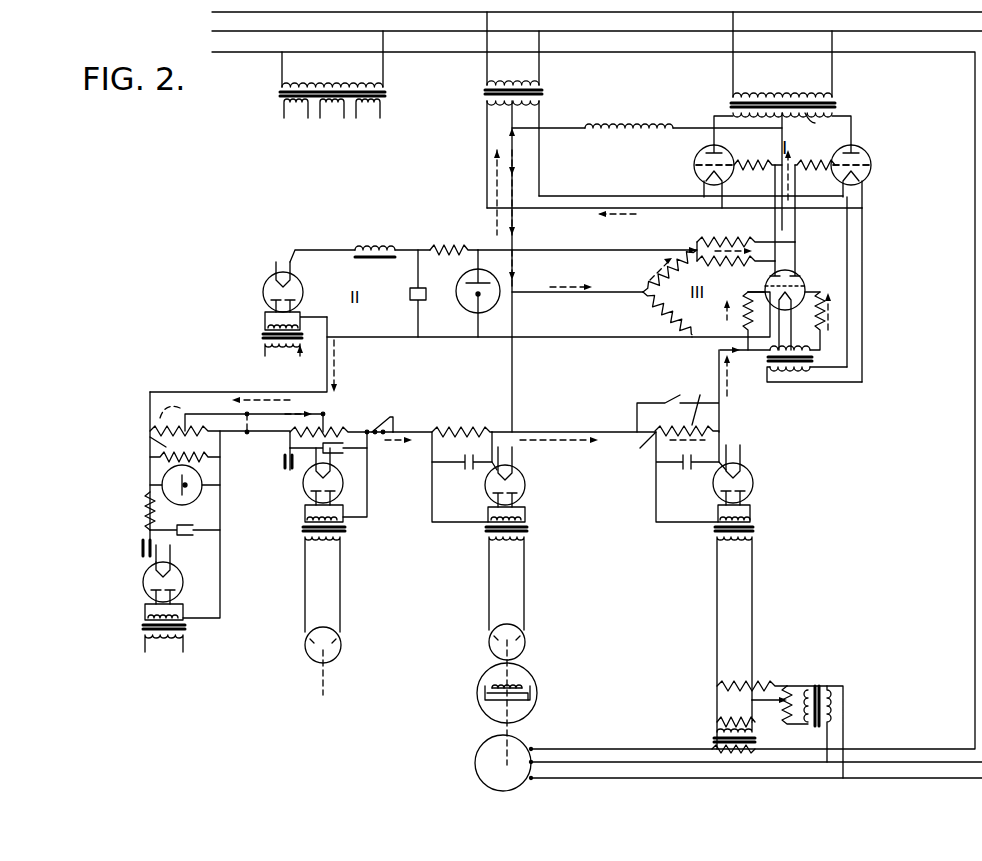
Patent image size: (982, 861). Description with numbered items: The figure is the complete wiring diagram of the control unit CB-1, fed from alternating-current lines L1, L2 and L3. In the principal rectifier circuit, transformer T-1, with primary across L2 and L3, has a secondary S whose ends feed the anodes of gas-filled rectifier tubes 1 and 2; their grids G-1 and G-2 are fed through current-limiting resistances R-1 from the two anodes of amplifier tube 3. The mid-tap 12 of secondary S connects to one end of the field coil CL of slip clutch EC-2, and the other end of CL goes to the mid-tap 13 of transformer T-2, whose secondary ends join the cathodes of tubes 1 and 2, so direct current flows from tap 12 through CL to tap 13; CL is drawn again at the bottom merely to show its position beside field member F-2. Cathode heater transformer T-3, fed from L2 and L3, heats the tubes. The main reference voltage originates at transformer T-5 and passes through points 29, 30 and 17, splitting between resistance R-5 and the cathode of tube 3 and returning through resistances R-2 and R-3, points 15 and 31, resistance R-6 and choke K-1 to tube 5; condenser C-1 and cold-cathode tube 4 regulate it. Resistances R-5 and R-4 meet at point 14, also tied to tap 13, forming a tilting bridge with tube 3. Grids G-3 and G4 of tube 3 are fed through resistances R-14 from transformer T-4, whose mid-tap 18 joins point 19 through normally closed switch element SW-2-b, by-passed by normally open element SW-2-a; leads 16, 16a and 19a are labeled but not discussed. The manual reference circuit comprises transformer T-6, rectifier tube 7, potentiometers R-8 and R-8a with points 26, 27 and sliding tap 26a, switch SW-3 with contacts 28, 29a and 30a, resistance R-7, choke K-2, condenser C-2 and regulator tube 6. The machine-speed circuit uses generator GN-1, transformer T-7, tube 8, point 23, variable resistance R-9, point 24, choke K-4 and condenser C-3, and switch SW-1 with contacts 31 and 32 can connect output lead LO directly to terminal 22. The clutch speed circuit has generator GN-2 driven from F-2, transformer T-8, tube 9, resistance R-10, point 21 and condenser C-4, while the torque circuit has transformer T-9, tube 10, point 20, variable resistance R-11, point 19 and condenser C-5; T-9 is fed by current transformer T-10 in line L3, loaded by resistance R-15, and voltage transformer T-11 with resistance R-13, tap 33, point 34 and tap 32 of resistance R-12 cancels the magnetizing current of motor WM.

The rectifier tube 1 is at (704, 156).
The rectifier tube 2 is at (864, 156).
The two-anode amplifier tube 3 is at (800, 282).
The cold cathode tube 4 is at (497, 288).
The tube 5 is at (264, 288).
The cold cathode tube 6 is at (186, 498).
The rectifier tube 7 is at (144, 582).
The tube 8 is at (342, 482).
The rectifier tube 9 is at (523, 487).
The rectifier tube 10 is at (753, 482).
The mid-tap 12 is at (780, 122).
The mid-tap 13 is at (514, 266).
The point 14 is at (643, 292).
The point 15 is at (690, 250).
The lead 16 is at (784, 261).
The lead 16a is at (784, 242).
The point 17 is at (696, 337).
The mid-tap 18 is at (780, 350).
The point 19 is at (725, 428).
The switch blade 19a is at (700, 386).
The point 20 is at (574, 442).
The point 21 is at (503, 440).
The point 22 is at (436, 462).
The point 23 is at (344, 420).
The point 24 is at (293, 429).
The point 26 is at (241, 411).
The sliding point 26a is at (210, 457).
The point 27 is at (211, 516).
The normally closed contact 28 is at (150, 430).
The point 29 is at (327, 337).
The normally open contact 29a is at (148, 458).
The point 30 is at (479, 337).
The normally open contact 30a is at (261, 427).
The normally open contact 31 is at (478, 250).
The normally closed contact 32 is at (752, 686).
The variable tap 33 is at (778, 700).
The point 34 is at (786, 684).
The line L1 is at (633, 778).
The line L2 is at (600, 762).
The line L3 is at (578, 745).
The transformer T-1 is at (833, 103).
The transformer T-2 is at (541, 98).
The cathode supply transformer T-3 is at (383, 90).
The transformer T-4 is at (763, 370).
The transformer T-5 is at (263, 331).
The supply transformer T-6 is at (144, 636).
The transformer T-7 is at (355, 576).
The transformer T-8 is at (556, 588).
The transformer T-9 is at (716, 548).
The current transformer T-10 is at (716, 736).
The voltage transformer T-11 is at (816, 686).
The field coil CL is at (610, 128).
The secondary S is at (814, 124).
The resistance R-1 is at (784, 154).
The resistance R-2 is at (746, 242).
The resistance R-3 is at (747, 282).
The resistance R-4 is at (676, 266).
The resistance R-5 is at (676, 310).
The resistance R-6 is at (444, 250).
The resistance R-7 is at (148, 519).
The potentiometer R-8 is at (220, 425).
The potentiometer R-8a is at (210, 462).
The variable resistance R-9 is at (327, 428).
The resistance R-10 is at (462, 428).
The variable resistance R-11 is at (687, 422).
The resistance R-12 is at (752, 675).
The resistance R-13 is at (784, 707).
The resistance R-14 is at (832, 329).
The resistance R-15 is at (720, 720).
The grid G-1 is at (696, 165).
The grid G-2 is at (868, 165).
The grid G-3 is at (760, 287).
The grid G4 is at (823, 281).
The condenser C-1 is at (417, 293).
The condenser C-2 is at (199, 532).
The condenser C-3 is at (340, 453).
The condenser C-4 is at (470, 464).
The condenser C-5 is at (682, 468).
The choke K-1 is at (374, 249).
The choke K-2 is at (140, 547).
The choke K-4 is at (288, 470).
The switch SW-1 is at (395, 415).
The switch element SW-2-a is at (678, 400).
The switch element SW-2-b is at (723, 403).
The switch SW-3 is at (147, 437).
The output lead LO is at (344, 366).
The A.C. generator GN-1 is at (341, 645).
The variable voltage generator GN-2 is at (525, 643).
The slip clutch EC-2 is at (529, 682).
The field member F-2 is at (528, 698).
The A.C. motor WM is at (504, 763).
The control unit CB-1 is at (152, 322).